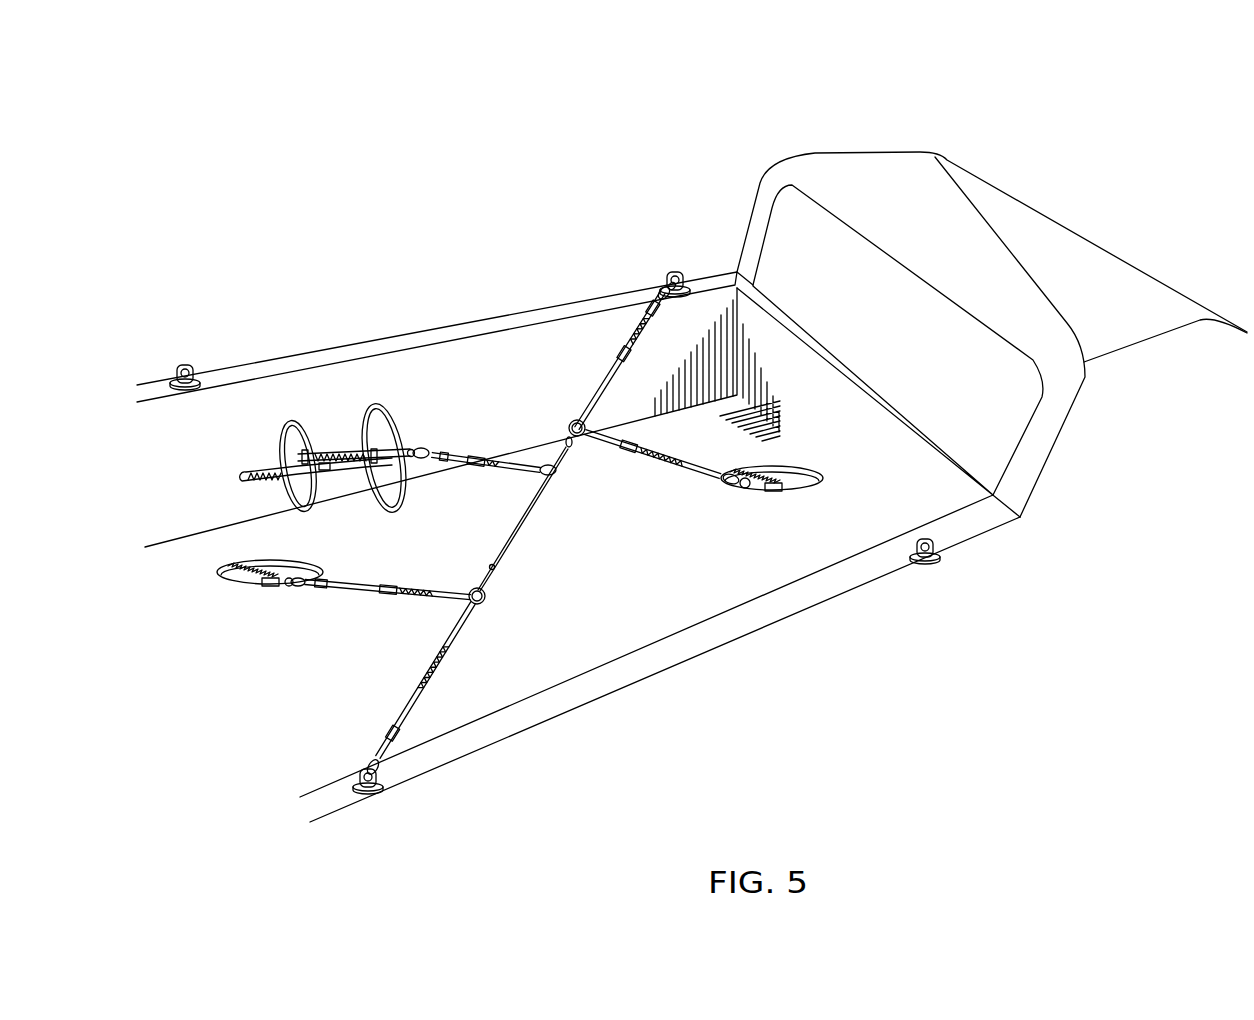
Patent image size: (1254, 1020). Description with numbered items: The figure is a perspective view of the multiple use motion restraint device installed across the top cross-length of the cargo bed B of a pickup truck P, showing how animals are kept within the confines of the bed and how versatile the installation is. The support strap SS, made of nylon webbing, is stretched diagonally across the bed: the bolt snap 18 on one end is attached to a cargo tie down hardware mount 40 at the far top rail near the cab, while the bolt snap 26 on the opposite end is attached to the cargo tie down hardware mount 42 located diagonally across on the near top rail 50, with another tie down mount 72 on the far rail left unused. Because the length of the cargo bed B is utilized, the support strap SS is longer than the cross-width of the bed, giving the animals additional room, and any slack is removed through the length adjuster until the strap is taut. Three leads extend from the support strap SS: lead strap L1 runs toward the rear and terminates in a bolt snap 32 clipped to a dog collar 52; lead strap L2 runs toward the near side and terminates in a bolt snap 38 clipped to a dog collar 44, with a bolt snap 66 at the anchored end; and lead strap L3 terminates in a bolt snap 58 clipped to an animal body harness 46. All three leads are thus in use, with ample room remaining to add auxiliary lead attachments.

The pickup truck P is at (890, 172).
The cargo bed B is at (480, 672).
The top rail 50 is at (672, 652).
The tie-down anchor 72 is at (192, 366).
The bolt snap 18 is at (682, 275).
The cargo tie down hardware mount 40 is at (660, 288).
The support strap SS is at (600, 390).
The lead strap L1 is at (602, 447).
The bolt snap 32 is at (720, 482).
The dog collar 52 is at (788, 492).
The cargo tie down hardware mount 42 is at (935, 550).
The animal body harness 46 is at (247, 470).
The snap hook 58 is at (422, 449).
The lead strap L3 is at (462, 462).
The dog collar 44 is at (230, 578).
The bolt snap 38 is at (297, 590).
The lead strap L2 is at (367, 592).
The snap hook 66 is at (355, 784).
The bolt snap 26 is at (385, 758).